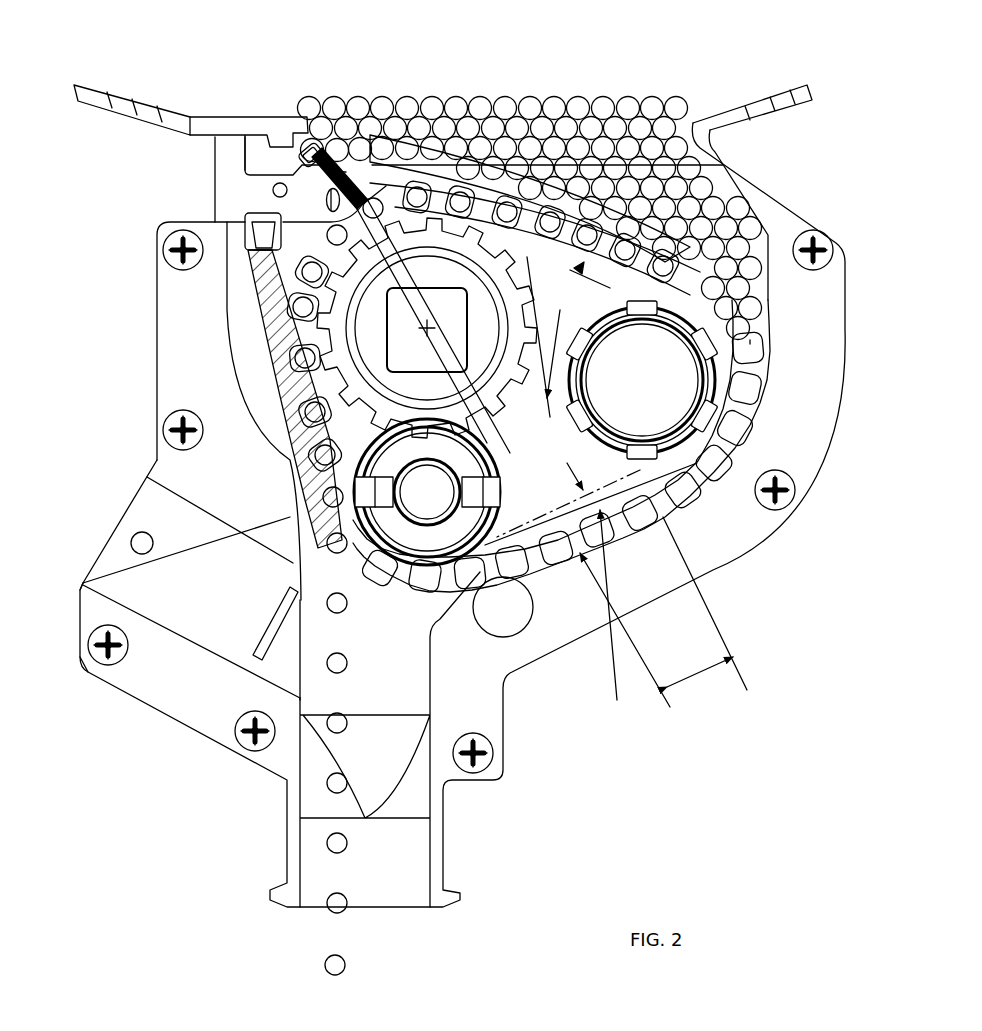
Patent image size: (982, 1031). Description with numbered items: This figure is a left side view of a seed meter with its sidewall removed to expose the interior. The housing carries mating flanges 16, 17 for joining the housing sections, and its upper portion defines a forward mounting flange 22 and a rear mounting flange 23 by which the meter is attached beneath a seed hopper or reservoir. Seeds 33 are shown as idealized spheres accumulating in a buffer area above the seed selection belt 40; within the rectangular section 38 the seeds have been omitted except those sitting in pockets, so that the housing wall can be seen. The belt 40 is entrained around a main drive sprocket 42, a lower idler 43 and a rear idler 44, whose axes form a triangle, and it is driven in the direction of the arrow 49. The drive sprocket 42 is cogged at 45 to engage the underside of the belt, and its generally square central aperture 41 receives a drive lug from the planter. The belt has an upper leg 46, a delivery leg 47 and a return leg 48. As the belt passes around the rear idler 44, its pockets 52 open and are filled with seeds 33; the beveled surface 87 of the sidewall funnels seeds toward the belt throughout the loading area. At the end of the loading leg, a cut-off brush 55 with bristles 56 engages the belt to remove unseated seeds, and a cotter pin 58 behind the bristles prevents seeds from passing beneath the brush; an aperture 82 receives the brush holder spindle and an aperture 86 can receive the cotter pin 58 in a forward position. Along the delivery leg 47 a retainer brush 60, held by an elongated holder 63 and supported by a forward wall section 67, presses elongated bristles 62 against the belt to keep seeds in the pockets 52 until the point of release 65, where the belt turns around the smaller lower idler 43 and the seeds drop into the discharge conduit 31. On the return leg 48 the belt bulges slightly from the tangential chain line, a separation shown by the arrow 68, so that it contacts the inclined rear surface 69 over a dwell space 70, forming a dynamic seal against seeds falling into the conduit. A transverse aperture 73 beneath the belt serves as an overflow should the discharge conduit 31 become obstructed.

The mating flange 16 is at (835, 313).
The mating flange 17 is at (215, 716).
The forward mounting flange 22 is at (91, 86).
The rear mounting flange 23 is at (790, 88).
The discharge conduit 31 is at (437, 873).
The seeds 33 is at (550, 103).
The rectangular section 38 is at (388, 130).
The seed selection belt 40 is at (620, 621).
The central aperture 41 is at (388, 306).
The main drive sprocket 42 is at (490, 320).
The lower idler 43 is at (467, 517).
The rear idler 44 is at (613, 338).
The cogs 45 is at (545, 344).
The upper leg 46 is at (498, 188).
The delivery leg 47 is at (268, 478).
The return leg 48 is at (698, 460).
The arrow 49 is at (660, 262).
The pockets 52 is at (748, 378).
The cut-off brush 55 is at (303, 140).
The bristles 56 is at (343, 170).
The cotter pin 58 is at (318, 200).
The retainer brush 60 is at (248, 254).
The elongated bristles 62 is at (300, 468).
The elongated holder 63 is at (245, 222).
The point of release 65 is at (337, 560).
The forward wall section 67 is at (110, 583).
The arrow 68 is at (620, 515).
The inclined rear surface 69 is at (657, 508).
The dwell space 70 is at (740, 654).
The transverse aperture 73 is at (507, 630).
The aperture 82 is at (262, 150).
The aperture 86 is at (272, 190).
The beveled surface 87 is at (490, 162).